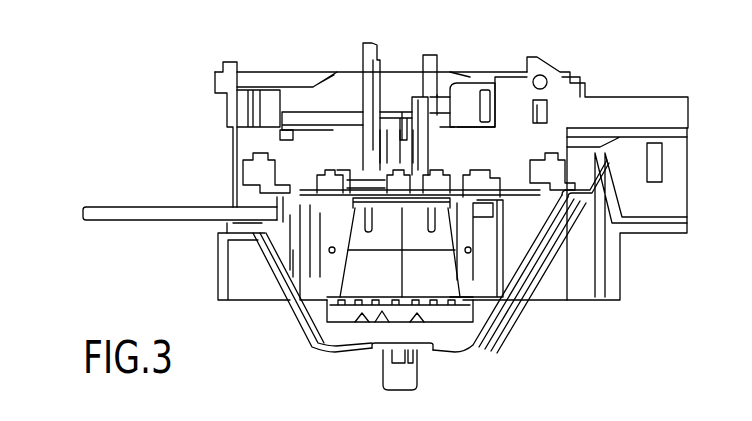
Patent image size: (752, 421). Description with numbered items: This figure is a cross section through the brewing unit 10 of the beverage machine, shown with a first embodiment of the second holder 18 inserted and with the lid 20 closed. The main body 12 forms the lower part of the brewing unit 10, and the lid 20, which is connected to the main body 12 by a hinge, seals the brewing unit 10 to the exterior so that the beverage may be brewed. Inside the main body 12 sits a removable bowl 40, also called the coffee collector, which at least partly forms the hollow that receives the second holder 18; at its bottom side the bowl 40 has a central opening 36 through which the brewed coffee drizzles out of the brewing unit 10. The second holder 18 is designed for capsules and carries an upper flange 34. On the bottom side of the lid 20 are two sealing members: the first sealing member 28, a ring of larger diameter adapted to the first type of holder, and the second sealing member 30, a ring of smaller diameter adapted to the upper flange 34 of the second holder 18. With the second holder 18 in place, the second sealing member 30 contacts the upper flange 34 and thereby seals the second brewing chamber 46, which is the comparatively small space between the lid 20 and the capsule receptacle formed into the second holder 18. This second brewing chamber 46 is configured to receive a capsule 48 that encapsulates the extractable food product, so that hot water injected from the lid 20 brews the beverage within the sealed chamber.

The brewing unit 10 is at (654, 54).
The main body 12 is at (492, 337).
The second holder 18 is at (268, 212).
The lid 20 is at (485, 72).
The first sealing member 28 is at (256, 152).
The second sealing member 30 is at (352, 176).
The upper flange 34 is at (342, 182).
The central opening 36 is at (418, 378).
The removable bowl 40 is at (498, 309).
The second brewing chamber 46 is at (493, 210).
The capsule 48 is at (372, 262).